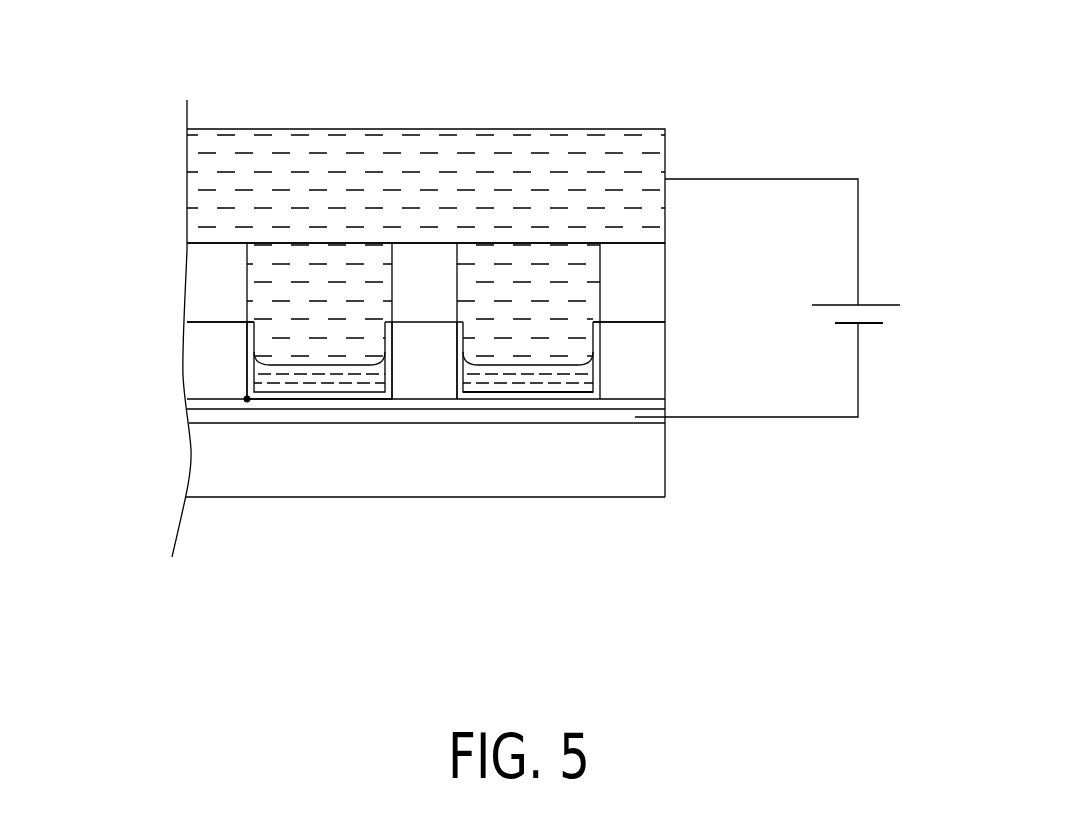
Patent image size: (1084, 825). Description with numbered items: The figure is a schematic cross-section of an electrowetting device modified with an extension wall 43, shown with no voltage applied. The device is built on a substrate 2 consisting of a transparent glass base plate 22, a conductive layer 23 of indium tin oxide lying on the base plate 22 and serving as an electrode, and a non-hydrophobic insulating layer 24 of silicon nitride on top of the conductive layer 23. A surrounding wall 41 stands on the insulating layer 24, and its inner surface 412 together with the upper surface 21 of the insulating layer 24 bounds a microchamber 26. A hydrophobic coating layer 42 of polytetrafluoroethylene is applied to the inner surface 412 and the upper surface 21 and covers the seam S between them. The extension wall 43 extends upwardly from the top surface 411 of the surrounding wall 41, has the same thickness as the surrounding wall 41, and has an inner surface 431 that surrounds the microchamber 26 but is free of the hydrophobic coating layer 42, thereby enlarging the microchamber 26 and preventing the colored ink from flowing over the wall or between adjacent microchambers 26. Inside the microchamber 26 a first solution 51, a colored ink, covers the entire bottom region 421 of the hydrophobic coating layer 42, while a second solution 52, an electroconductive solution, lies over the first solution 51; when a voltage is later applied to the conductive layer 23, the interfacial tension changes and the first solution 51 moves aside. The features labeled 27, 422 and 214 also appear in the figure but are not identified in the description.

The substrate 2 is at (703, 487).
The upper surface 21 is at (623, 398).
The transparent base plate 22 is at (618, 477).
The conductive layer 23 is at (657, 420).
The non-hydrophobic insulating layer 24 is at (657, 403).
The microchamber 26 is at (310, 347).
The fluid channel 27 is at (268, 283).
The surrounding wall 41 is at (403, 353).
The top surface 411 is at (622, 315).
The inner surface 412 is at (600, 343).
The hydrophobic coating layer 42 is at (248, 378).
The bottom region 421 is at (563, 397).
The side portion of hydrophobic layer 422 is at (462, 392).
The extension wall 43 is at (213, 257).
The inner surface 431 is at (602, 295).
The first solution 51 is at (350, 377).
The second solution 52 is at (374, 177).
The recess bottom 214 is at (485, 392).
The seam S is at (247, 399).